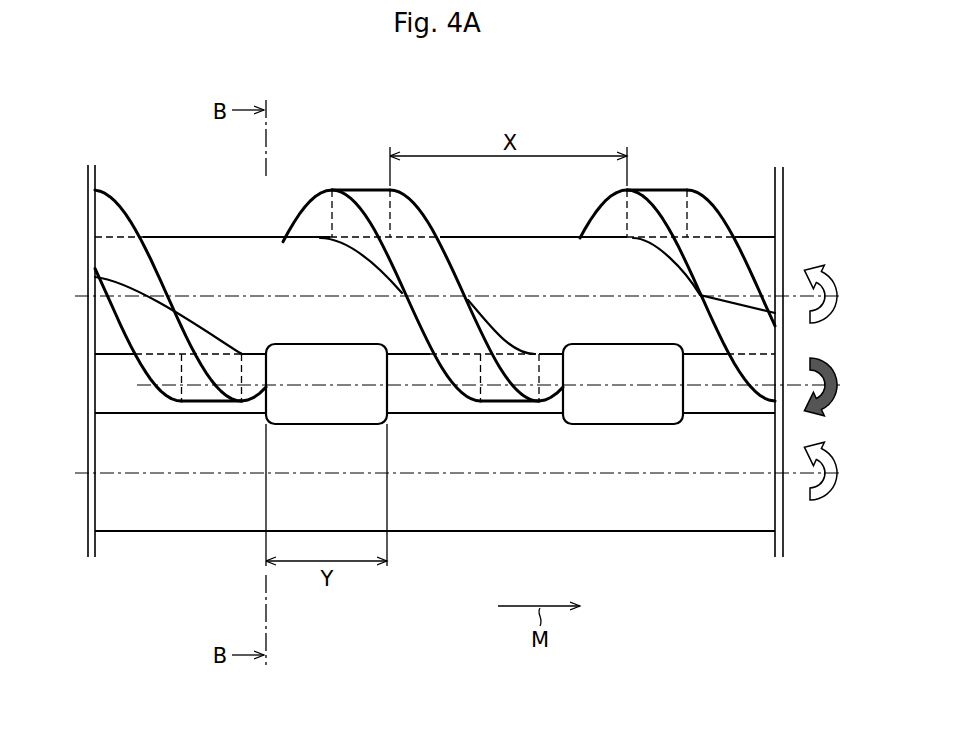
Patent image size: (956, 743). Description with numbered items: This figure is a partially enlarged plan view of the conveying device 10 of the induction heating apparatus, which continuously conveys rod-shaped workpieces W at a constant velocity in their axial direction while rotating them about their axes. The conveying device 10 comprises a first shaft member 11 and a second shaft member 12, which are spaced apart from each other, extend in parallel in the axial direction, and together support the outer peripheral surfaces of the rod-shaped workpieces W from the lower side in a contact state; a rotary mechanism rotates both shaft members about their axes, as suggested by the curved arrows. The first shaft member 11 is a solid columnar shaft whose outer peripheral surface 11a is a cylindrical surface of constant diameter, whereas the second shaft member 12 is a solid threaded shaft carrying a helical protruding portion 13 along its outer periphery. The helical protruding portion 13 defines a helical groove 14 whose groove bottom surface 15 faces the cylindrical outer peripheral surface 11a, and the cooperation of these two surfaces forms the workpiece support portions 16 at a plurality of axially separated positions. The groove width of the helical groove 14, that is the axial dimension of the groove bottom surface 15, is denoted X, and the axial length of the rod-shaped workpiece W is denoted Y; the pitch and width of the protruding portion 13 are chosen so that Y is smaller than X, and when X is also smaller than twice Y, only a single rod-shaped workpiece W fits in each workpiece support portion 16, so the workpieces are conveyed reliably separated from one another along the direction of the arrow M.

The conveying device 10 is at (708, 142).
The first shaft member 11 is at (122, 497).
The outer peripheral surface 11a is at (418, 413).
The second shaft member 12 is at (104, 332).
The helical protruding portion 13 is at (370, 186).
The helical groove 14 is at (215, 234).
The groove bottom surface 15 is at (172, 236).
The workpiece support portion 16 is at (261, 406).
The rod-shaped workpiece W is at (317, 341).